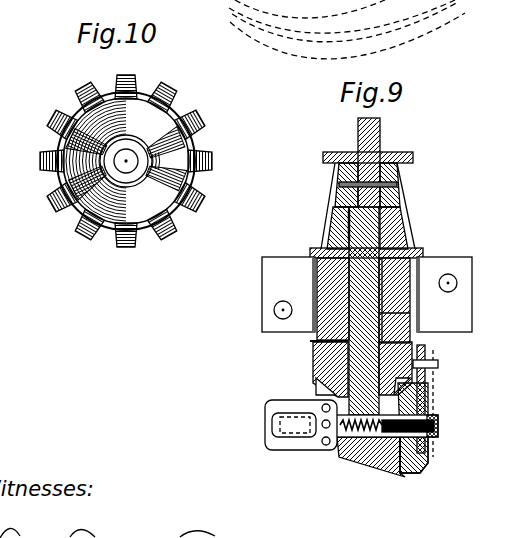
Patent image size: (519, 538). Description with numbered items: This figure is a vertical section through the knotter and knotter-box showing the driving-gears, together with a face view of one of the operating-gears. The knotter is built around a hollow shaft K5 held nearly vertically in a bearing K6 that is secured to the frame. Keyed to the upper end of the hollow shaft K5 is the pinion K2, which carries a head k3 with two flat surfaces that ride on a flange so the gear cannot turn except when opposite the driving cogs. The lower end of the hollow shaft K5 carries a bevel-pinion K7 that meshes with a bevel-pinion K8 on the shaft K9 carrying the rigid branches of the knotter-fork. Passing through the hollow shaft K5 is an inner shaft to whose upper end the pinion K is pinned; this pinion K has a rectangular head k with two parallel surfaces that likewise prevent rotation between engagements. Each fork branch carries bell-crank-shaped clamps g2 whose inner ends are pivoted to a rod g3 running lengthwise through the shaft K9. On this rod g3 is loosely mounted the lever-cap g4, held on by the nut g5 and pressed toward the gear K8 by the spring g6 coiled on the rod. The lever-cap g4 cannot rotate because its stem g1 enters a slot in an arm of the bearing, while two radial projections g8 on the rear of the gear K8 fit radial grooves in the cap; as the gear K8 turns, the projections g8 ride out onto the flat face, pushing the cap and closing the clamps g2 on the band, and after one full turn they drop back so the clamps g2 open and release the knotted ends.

In FIG. 10, the bevel-pinion K8 is at (126, 161).
In FIG. 9, the bevel-pinion K8 is at (413, 462).
In FIG. 10, the radial projections g8 is at (58, 176).
In FIG. 9, the rectangular head k is at (413, 154).
In FIG. 9, the pinion K is at (398, 188).
In FIG. 9, the pinion K2 is at (408, 227).
In FIG. 9, the head of gear K2 k3 is at (424, 252).
In FIG. 9, the bearing K6 is at (289, 294).
In FIG. 9, the hollow shaft K5 is at (384, 313).
In FIG. 9, the bevel-pinion K7 is at (317, 387).
In FIG. 9, the shaft K9 is at (432, 452).
In FIG. 9, the spring g6 is at (344, 458).
In FIG. 9, the stem g1 is at (426, 352).
In FIG. 9, the lever-cap g4 is at (428, 388).
In FIG. 9, the rod g3 is at (440, 424).
In FIG. 9, the nut g5 is at (437, 415).
In FIG. 9, the bell-crank-shaped clamps g2 is at (283, 403).